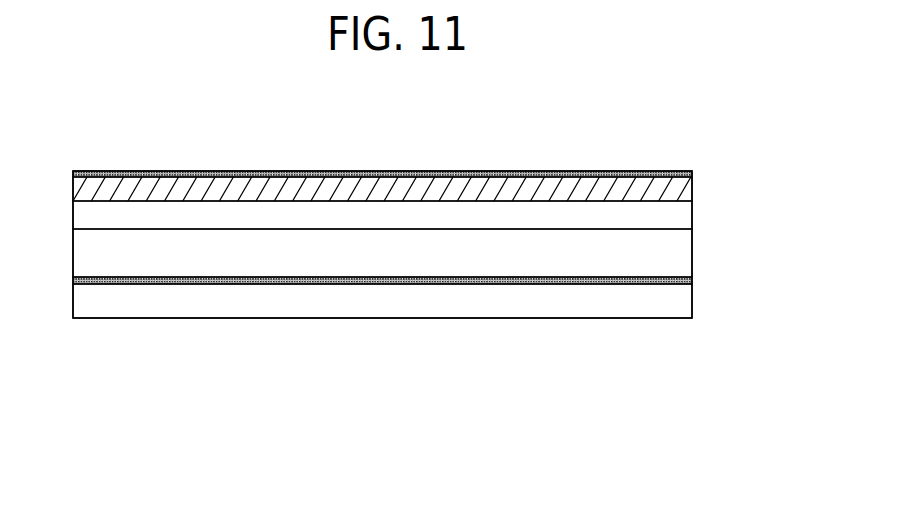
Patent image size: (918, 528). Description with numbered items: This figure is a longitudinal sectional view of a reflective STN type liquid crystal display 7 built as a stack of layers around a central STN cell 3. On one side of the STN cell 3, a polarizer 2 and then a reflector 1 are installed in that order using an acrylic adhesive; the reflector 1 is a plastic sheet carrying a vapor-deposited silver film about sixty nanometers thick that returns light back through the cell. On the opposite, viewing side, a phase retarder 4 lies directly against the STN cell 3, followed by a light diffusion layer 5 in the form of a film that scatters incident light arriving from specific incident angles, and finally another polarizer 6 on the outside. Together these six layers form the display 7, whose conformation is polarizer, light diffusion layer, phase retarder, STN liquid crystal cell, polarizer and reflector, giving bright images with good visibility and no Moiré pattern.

The reflector 1 is at (682, 301).
The polarizer 2 is at (692, 278).
The STN cell 3 is at (677, 250).
The phase retarder 4 is at (680, 212).
The light diffusion layer 5 is at (692, 192).
The polarizer 6 is at (692, 173).
The reflective STN type liquid crystal display 7 is at (822, 93).